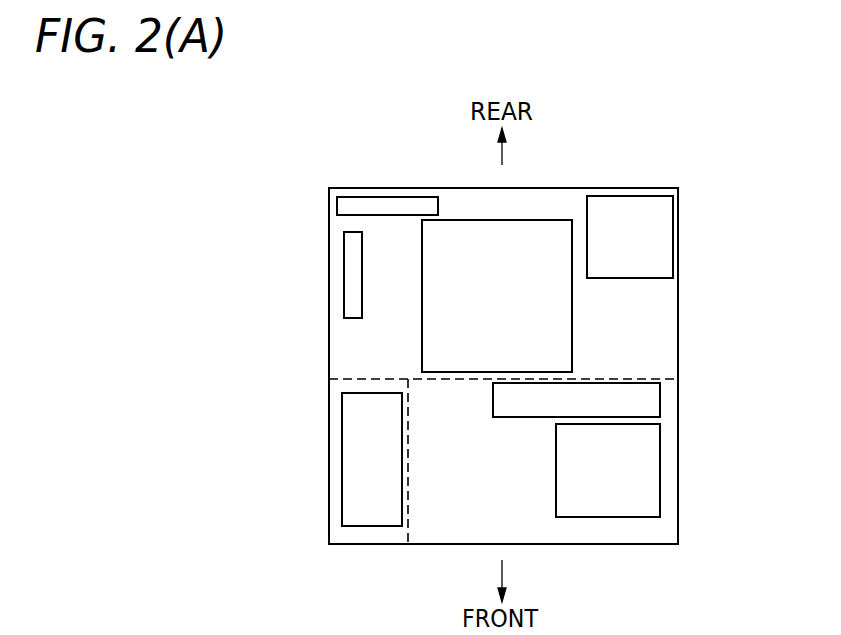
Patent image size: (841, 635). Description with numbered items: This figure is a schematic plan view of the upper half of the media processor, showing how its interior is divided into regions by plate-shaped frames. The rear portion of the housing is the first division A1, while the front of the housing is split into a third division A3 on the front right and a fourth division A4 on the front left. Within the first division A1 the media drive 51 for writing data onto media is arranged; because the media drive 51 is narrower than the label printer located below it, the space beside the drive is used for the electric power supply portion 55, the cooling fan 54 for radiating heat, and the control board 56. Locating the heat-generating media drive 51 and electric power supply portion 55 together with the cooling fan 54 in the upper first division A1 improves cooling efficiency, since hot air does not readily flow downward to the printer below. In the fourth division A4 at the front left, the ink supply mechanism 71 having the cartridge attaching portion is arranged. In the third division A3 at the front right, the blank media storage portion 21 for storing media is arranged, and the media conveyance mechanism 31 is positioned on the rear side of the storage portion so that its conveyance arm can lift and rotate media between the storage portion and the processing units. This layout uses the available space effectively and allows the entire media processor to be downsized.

The first division A1 is at (663, 325).
The third division A3 is at (627, 533).
The fourth division A4 is at (342, 545).
The blank media storage portion 21 is at (648, 475).
The media conveyance mechanism 31 is at (655, 405).
The media drive 51 is at (535, 240).
The cooling fan 54 is at (366, 206).
The electric power supply portion 55 is at (651, 238).
The control board 56 is at (350, 273).
The ink supply mechanism 71 is at (363, 462).